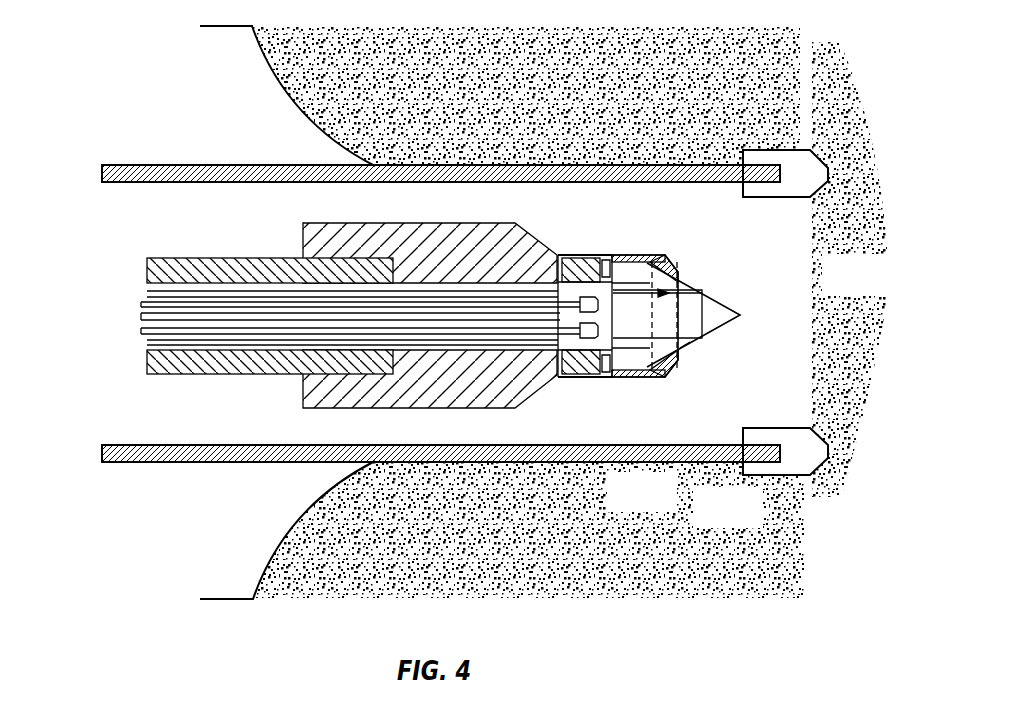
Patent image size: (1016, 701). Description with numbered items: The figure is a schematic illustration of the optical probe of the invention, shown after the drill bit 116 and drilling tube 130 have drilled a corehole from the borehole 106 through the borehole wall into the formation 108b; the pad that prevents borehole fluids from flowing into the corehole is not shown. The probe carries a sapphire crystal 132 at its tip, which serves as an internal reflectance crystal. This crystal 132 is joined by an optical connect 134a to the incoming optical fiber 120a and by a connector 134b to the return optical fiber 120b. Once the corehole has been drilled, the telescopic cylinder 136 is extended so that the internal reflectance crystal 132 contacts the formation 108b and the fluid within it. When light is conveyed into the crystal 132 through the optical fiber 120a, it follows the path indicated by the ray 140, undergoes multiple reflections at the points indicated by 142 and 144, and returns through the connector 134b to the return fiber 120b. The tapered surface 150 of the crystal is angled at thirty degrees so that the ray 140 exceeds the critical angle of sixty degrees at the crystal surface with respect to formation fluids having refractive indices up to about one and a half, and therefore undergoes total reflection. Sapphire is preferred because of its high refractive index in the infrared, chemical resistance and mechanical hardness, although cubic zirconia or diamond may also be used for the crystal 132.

The borehole 106 is at (232, 113).
The formation 108b is at (890, 289).
The drill bit 116 is at (784, 468).
The incoming optical fiber 120a is at (142, 300).
The return optical fiber 120b is at (140, 335).
The drilling tube 130 is at (585, 455).
The sapphire crystal 132 is at (665, 374).
The optical connect 134a is at (592, 300).
The connector 134b is at (585, 337).
The telescopic cylinder 136 is at (240, 365).
The ray 140 is at (670, 292).
The reflection point 142 is at (697, 300).
The reflection point 144 is at (698, 338).
The tapered surface 150 is at (684, 350).